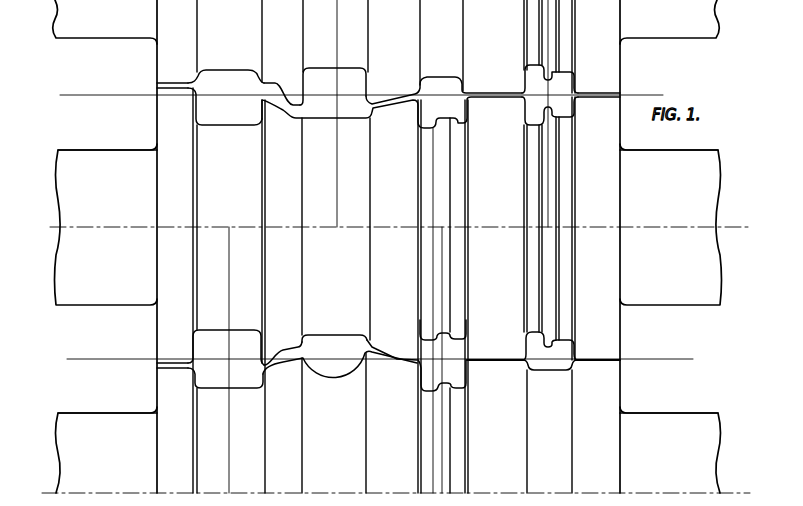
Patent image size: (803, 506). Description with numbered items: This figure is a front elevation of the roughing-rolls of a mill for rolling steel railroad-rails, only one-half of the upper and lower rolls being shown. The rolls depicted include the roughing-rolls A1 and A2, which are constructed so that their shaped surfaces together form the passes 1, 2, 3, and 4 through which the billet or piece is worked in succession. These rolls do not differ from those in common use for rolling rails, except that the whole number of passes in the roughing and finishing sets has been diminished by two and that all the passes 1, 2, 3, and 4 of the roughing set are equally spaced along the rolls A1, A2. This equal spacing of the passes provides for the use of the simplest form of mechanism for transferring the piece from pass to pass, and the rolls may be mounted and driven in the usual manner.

The pass 1 is at (226, 359).
The pass 2 is at (277, 205).
The pass 3 is at (442, 355).
The pass 4 is at (550, 95).
The roughing-roll A1 is at (388, 191).
The roughing-roll A2 is at (388, 448).